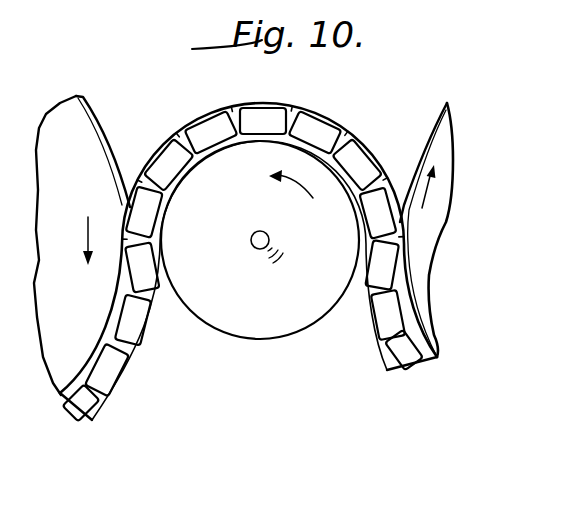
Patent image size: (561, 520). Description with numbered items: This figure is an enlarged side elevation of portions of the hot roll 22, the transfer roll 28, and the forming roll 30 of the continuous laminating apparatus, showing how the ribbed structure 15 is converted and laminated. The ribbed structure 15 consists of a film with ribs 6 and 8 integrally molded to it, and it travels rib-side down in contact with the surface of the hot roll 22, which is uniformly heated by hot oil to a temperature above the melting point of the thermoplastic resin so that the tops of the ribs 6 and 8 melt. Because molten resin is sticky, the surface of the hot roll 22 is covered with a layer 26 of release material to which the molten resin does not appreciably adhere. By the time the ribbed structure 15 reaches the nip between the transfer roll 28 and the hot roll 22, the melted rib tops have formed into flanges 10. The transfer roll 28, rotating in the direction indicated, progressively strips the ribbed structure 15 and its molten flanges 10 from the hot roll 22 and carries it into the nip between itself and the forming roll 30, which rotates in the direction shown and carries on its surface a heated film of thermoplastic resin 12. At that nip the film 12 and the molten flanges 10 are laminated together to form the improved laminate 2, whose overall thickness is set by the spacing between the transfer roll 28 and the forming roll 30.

The laminate 2 is at (248, 249).
The rib 6 is at (311, 108).
The rib 8 is at (338, 151).
The flange 10 is at (343, 137).
The film of thermoplastic resin 12 is at (101, 116).
The ribbed structure 15 is at (350, 321).
The hot roll 22 is at (424, 235).
The layer of release material 26 is at (428, 138).
The transfer roll 28 is at (287, 306).
The forming roll 30 is at (92, 297).